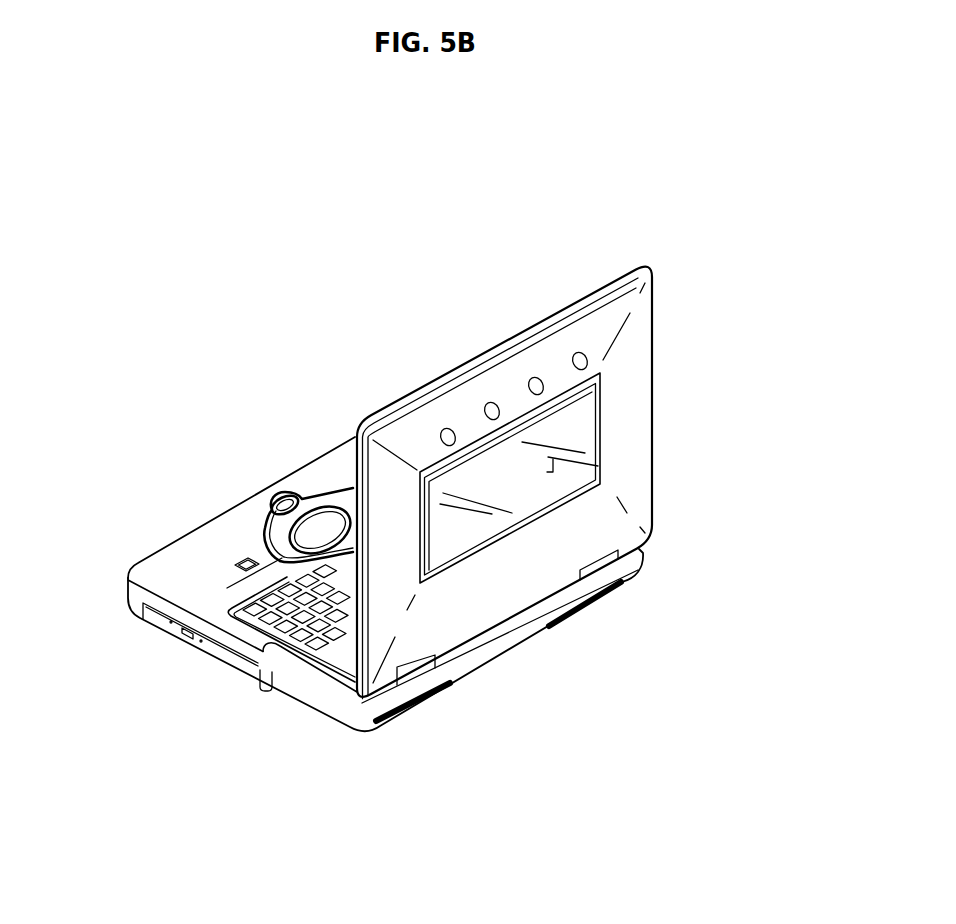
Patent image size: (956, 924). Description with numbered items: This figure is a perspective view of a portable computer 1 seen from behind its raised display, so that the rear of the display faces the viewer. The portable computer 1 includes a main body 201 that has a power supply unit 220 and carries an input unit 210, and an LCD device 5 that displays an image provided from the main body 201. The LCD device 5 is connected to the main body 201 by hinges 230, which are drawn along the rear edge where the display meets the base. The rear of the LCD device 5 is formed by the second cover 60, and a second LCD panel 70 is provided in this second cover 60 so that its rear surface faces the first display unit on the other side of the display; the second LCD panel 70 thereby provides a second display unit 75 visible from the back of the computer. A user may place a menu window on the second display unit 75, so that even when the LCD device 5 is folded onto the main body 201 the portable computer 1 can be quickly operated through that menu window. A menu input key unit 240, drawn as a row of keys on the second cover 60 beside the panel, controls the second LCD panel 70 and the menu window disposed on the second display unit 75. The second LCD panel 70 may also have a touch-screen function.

The portable computer 1 is at (70, 166).
The LCD device 5 is at (548, 304).
The second cover 60 is at (628, 332).
The second LCD panel 70 is at (606, 393).
The second display unit 75 is at (556, 466).
The menu input key unit 240 is at (457, 426).
The hinges 230 is at (421, 668).
The power supply unit 220 is at (160, 620).
The input unit 210 is at (277, 645).
The main body 201 is at (313, 705).